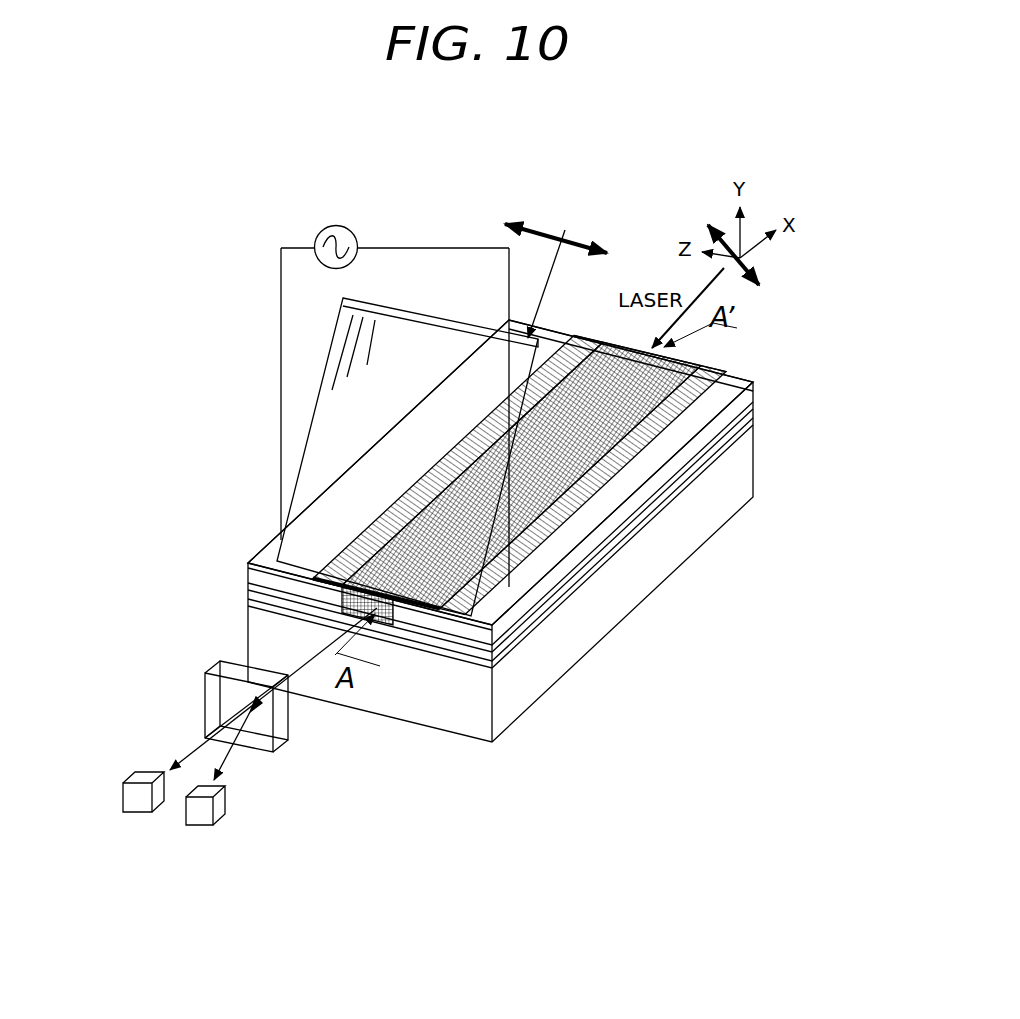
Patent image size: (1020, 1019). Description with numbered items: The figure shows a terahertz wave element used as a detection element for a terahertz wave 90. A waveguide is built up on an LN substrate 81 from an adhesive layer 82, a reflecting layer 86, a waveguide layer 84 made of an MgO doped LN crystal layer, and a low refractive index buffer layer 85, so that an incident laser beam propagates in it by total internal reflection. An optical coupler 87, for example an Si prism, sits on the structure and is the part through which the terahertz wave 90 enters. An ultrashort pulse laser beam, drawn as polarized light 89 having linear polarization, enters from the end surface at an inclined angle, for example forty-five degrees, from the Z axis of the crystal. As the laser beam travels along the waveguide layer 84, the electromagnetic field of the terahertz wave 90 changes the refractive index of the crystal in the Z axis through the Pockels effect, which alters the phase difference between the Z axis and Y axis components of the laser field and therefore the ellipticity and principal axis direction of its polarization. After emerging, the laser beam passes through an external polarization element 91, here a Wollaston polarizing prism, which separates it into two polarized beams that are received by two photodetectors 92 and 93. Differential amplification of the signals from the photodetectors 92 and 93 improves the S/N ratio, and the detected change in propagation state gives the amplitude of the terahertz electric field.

The LN substrate 81 is at (756, 470).
The adhesive layer 82 is at (756, 422).
The waveguide layer 84 is at (390, 612).
The low refractive index buffer layer 85 is at (283, 589).
The reflecting layer 86 is at (756, 400).
The optical coupler 87 is at (372, 344).
The polarized light 89 is at (763, 281).
The terahertz wave 90 is at (584, 236).
The polarization element 91 is at (284, 725).
The photodetector 92 is at (214, 806).
The photodetector 93 is at (124, 799).